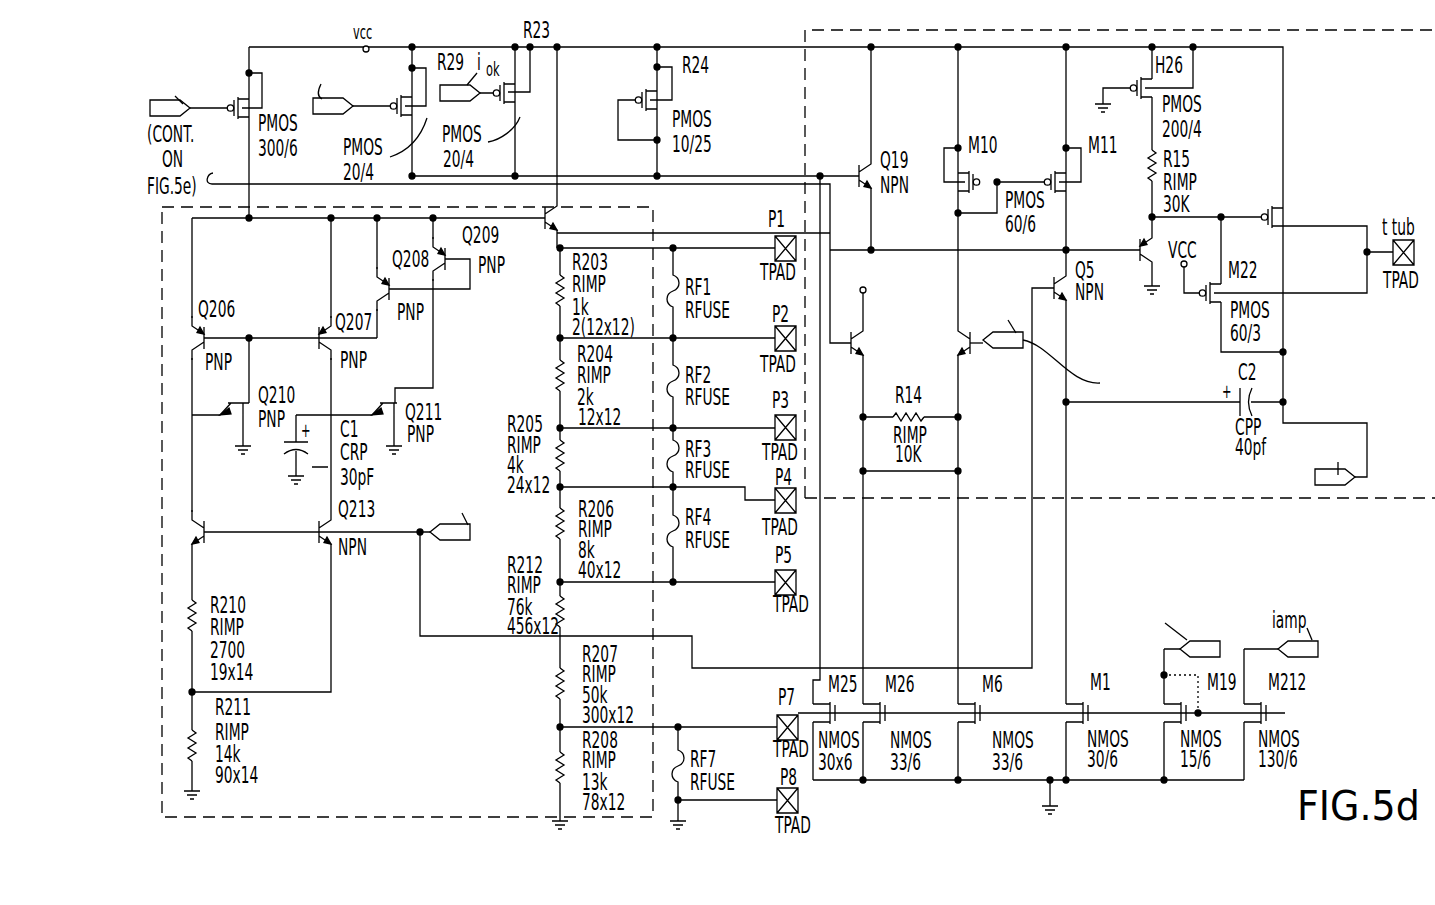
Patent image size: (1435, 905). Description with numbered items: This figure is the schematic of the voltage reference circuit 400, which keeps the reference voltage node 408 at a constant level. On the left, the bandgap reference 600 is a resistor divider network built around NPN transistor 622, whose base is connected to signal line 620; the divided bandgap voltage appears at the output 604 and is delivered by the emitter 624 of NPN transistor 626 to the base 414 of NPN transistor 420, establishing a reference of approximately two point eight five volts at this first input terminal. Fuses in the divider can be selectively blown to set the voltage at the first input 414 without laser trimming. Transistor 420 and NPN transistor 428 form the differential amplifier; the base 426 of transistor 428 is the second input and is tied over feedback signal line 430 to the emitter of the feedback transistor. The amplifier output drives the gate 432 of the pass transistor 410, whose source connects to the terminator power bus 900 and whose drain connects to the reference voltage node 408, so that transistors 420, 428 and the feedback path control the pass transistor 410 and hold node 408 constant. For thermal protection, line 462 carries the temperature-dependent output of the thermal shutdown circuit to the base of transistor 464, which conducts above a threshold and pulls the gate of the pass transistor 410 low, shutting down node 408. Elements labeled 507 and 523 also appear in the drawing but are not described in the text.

The voltage reference circuit 400 is at (1205, 495).
The reference voltage node 408 is at (1352, 483).
The pass transistor 410 is at (1297, 212).
The first input terminal 414 is at (813, 277).
The NPN transistor 420 is at (900, 333).
The base 426 is at (982, 365).
The NPN transistor 428 is at (968, 338).
The feedback signal line 430 is at (1079, 369).
The gate 432 is at (1240, 214).
The line 462 is at (228, 185).
The transistor 464 is at (1135, 246).
The Von input 507 is at (330, 115).
The ib input 523 is at (1208, 642).
The bandgap reference 600 is at (315, 807).
The output terminal 604 is at (615, 227).
The signal line 620 is at (470, 545).
The NPN transistor 622 is at (235, 570).
The emitter 624 is at (545, 238).
The NPN transistor 626 is at (543, 222).
The terminator power bus 900 is at (1090, 45).